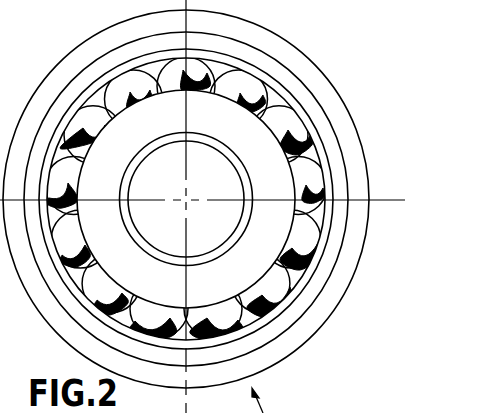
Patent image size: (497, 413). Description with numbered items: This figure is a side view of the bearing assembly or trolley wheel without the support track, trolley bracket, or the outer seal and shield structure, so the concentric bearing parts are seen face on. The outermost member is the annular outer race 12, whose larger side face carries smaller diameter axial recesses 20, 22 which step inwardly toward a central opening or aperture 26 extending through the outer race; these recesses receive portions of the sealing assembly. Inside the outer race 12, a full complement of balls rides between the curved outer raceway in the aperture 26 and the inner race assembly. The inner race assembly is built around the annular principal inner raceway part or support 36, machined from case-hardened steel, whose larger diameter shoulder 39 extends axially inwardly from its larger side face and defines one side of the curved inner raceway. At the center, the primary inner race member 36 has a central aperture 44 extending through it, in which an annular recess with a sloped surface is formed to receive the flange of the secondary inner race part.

The outer race 12 is at (292, 36).
The axial recess 20 is at (309, 92).
The axial recess 22 is at (321, 144).
The central opening or aperture 26 is at (298, 280).
The principal inner raceway part or support 36 is at (224, 292).
The larger diameter shoulder 39 is at (238, 297).
The central aperture 44 is at (141, 239).